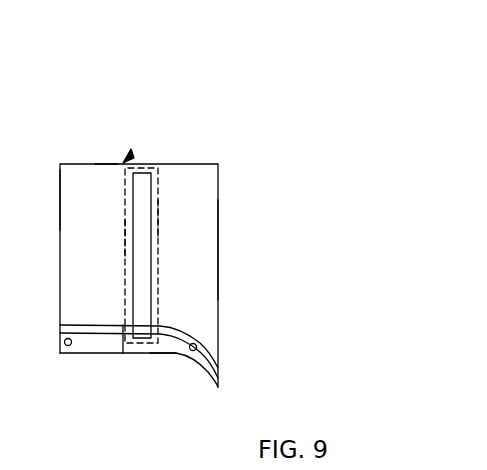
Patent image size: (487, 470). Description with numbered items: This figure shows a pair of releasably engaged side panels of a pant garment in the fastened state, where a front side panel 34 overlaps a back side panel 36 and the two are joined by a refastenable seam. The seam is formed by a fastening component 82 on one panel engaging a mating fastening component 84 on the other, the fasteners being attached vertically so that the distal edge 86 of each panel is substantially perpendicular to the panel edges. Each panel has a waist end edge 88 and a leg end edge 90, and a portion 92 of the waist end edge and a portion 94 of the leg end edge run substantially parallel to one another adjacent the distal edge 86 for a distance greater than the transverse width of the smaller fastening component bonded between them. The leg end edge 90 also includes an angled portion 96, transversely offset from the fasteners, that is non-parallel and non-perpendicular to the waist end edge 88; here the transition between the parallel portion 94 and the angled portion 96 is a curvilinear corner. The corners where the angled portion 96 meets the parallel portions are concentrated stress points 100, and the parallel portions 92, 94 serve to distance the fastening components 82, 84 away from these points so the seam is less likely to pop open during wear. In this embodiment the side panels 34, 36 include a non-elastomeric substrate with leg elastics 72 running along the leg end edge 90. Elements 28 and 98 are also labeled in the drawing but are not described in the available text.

The locking mechanism 28 is at (125, 160).
The front side panel 34 is at (73, 261).
The back side panel 36 is at (210, 263).
The leg elastics 72 is at (90, 324).
The fastening component 82 is at (138, 197).
The mating fastening component 84 is at (160, 223).
The distal edge 86 is at (124, 245).
The waist end edge 88 is at (180, 163).
The leg end edge 90 is at (130, 354).
The parallel portion of the waist end edge 92 is at (106, 162).
The parallel portion of the leg end edge 94 is at (155, 353).
The angled portion 96 is at (205, 370).
The side edges 98 is at (58, 217).
The concentrated stress point 100 is at (64, 342).